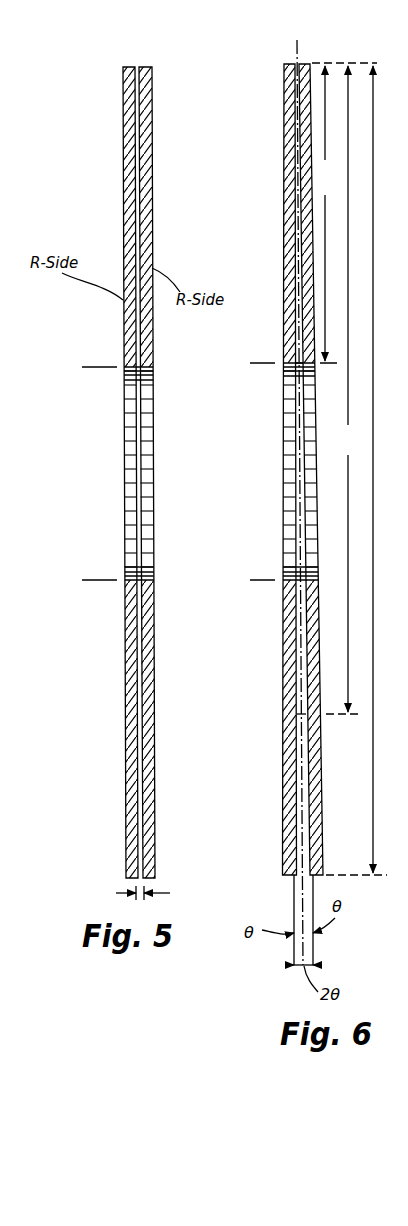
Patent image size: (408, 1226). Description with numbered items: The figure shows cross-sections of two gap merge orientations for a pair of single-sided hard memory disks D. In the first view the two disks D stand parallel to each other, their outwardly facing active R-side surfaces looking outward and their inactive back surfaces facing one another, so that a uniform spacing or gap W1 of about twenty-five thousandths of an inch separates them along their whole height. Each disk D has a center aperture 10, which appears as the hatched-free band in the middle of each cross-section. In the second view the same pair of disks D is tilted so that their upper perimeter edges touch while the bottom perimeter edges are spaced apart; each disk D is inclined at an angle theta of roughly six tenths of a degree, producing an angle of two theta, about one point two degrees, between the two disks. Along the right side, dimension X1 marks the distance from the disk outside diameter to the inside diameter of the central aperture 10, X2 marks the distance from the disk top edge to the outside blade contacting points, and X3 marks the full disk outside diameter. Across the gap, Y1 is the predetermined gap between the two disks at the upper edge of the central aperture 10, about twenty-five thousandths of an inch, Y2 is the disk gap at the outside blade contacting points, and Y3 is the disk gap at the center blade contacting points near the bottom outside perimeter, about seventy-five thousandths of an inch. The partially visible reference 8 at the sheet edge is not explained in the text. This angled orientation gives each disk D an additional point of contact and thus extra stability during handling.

In FIG. 5, the center aperture 10 is at (100, 372).
In FIG. 6, the center aperture 10 is at (268, 368).
In FIG. 6, the rod assembly 8 is at (359, 171).
In FIG. 5, the disk D is at (123, 67).
In FIG. 6, the disk D is at (284, 64).
In FIG. 5, the spacing or gap W1 is at (157, 898).
In FIG. 6, the distance from disk outside diameter to inside diameter X1 is at (325, 213).
In FIG. 6, the distance from disk top edge to outside blade contacting points X2 is at (347, 389).
In FIG. 6, the disk outside diameter X3 is at (355, 469).
In FIG. 6, the predetermined gap between the two disks Y1 is at (300, 363).
In FIG. 6, the disk gap at the outside blade contacting points Y2 is at (300, 714).
In FIG. 6, the disk gap at the center blade contacting points Y3 is at (300, 877).